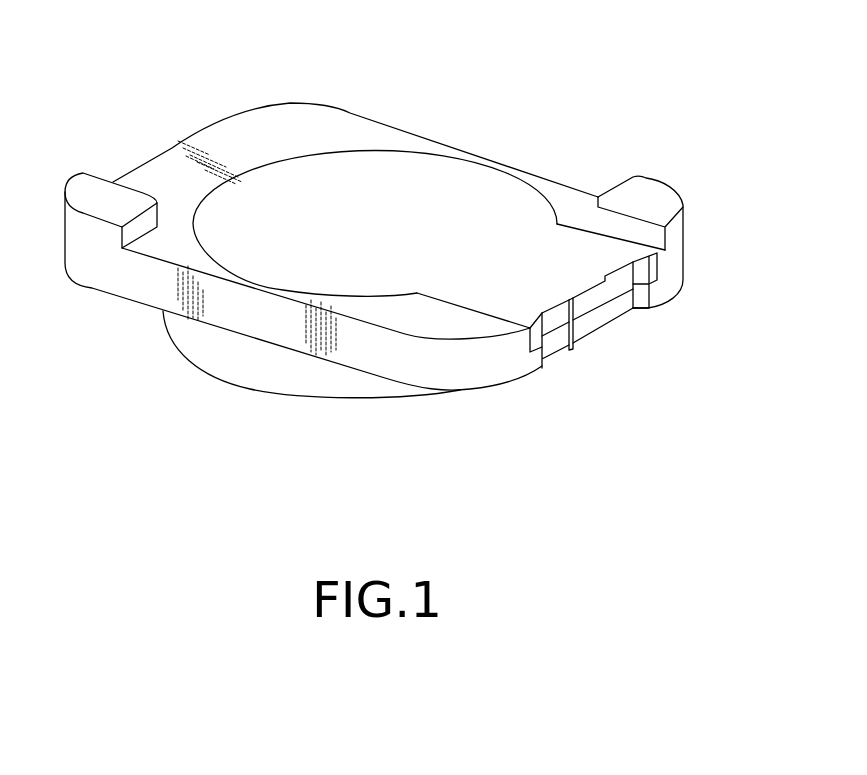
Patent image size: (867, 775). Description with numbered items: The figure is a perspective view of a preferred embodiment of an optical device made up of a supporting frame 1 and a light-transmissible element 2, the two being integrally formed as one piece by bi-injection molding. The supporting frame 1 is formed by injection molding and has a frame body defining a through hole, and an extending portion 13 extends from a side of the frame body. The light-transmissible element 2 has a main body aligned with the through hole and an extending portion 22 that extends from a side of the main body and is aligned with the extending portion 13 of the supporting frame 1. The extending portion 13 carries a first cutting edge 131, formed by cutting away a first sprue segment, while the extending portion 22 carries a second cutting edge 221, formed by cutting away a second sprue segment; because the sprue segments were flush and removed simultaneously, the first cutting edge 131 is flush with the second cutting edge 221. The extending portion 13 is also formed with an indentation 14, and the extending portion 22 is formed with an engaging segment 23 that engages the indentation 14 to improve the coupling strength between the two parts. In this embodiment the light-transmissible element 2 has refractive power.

The supporting frame 1 is at (385, 108).
The light-transmissible element 2 is at (461, 198).
The extending portion 22 is at (581, 214).
The engaging segment 23 is at (460, 293).
The indentation 14 is at (486, 314).
The extending portion 13 is at (634, 321).
The first cutting edge 131 is at (596, 325).
The second cutting edge 221 is at (580, 304).